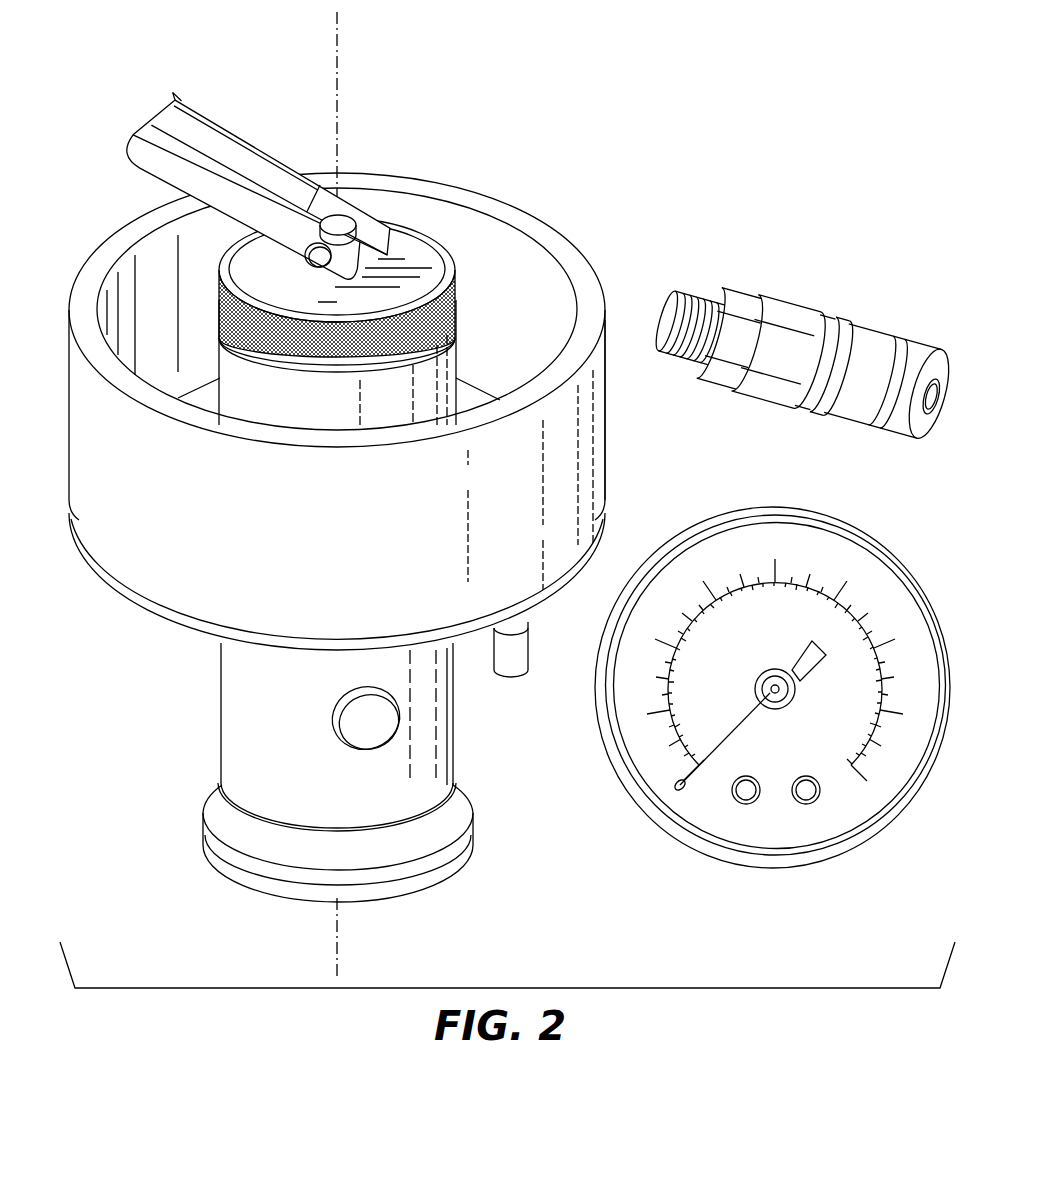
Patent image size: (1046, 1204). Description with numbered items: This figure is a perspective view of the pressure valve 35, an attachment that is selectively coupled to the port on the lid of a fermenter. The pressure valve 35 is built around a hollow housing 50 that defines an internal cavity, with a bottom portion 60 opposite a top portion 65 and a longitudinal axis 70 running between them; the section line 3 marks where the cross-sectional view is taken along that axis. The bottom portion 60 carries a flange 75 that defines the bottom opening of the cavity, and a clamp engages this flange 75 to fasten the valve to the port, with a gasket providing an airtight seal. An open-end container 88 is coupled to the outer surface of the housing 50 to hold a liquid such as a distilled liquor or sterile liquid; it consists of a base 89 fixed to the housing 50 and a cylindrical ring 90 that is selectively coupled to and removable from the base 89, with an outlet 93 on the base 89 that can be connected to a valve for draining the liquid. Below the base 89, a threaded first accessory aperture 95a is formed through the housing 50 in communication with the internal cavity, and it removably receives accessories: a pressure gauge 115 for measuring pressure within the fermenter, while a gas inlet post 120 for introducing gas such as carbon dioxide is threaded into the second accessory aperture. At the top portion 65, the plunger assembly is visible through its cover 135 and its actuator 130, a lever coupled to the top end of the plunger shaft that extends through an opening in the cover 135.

The section line 3- 3 is at (343, 128).
The pressure valve 35 is at (494, 138).
The housing 50 is at (423, 683).
The bottom portion 60 is at (155, 770).
The top portion 65 is at (198, 311).
The longitudinal axis 70 is at (338, 72).
The flange 75 is at (463, 815).
The open-end container 88 is at (634, 456).
The base 89 is at (158, 626).
The cylindrical ring 90 is at (323, 421).
The outlet 93 is at (518, 648).
The first accessory aperture 95a is at (370, 754).
The pressure gauge 115 is at (835, 527).
The gas inlet post 120 is at (868, 340).
The actuator 130 is at (193, 130).
The cover 135 is at (456, 297).